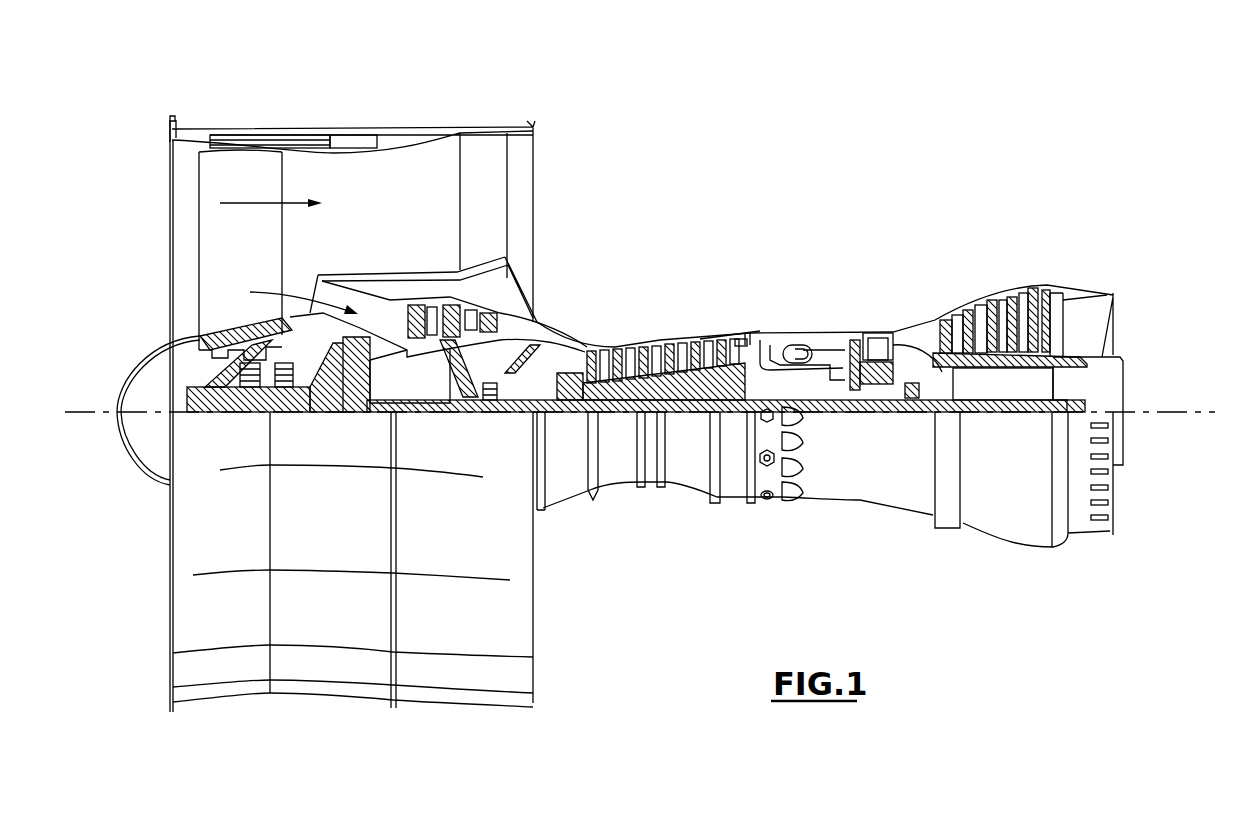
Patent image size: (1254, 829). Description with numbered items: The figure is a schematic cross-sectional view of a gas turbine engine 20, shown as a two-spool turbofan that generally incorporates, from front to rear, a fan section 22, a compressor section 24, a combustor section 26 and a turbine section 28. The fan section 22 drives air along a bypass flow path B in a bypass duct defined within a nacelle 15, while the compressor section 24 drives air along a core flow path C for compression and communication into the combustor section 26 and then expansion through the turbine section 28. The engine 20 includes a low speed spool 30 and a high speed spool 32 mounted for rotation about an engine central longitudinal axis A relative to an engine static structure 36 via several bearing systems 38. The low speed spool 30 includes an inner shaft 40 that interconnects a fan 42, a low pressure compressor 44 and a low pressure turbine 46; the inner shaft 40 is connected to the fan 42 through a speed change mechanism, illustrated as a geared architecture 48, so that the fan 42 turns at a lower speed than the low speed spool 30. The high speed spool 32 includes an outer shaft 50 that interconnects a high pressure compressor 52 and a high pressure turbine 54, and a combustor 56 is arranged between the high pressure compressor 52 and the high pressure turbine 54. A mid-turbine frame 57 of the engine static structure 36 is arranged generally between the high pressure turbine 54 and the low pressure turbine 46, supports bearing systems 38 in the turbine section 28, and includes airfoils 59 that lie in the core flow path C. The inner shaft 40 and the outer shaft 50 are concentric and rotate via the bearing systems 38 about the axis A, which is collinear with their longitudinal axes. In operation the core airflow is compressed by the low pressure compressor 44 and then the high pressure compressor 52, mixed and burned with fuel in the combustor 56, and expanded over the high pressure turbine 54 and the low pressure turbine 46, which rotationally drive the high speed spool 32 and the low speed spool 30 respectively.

The nacelle 15 is at (356, 133).
The gas turbine engine 20 is at (815, 178).
The fan section 22 is at (282, 116).
The compressor section 24 is at (588, 320).
The combustor section 26 is at (807, 300).
The turbine section 28 is at (955, 268).
The low speed spool 30 is at (690, 430).
The high speed spool 32 is at (738, 346).
The engine static structure 36 is at (732, 510).
The bearing systems 38 is at (488, 407).
The inner shaft 40 is at (553, 413).
The fan 42 is at (254, 257).
The low pressure compressor 44 is at (457, 325).
The low pressure turbine 46 is at (1000, 297).
The geared architecture 48 is at (360, 410).
The outer shaft 50 is at (808, 412).
The high pressure compressor 52 is at (660, 383).
The high pressure turbine 54 is at (873, 332).
The combustor 56 is at (805, 353).
The mid-turbine frame 57 is at (920, 313).
The airfoils 59 is at (940, 370).
The engine central longitudinal axis A is at (1203, 412).
The bypass flow path B is at (256, 203).
The core flow path C is at (296, 298).